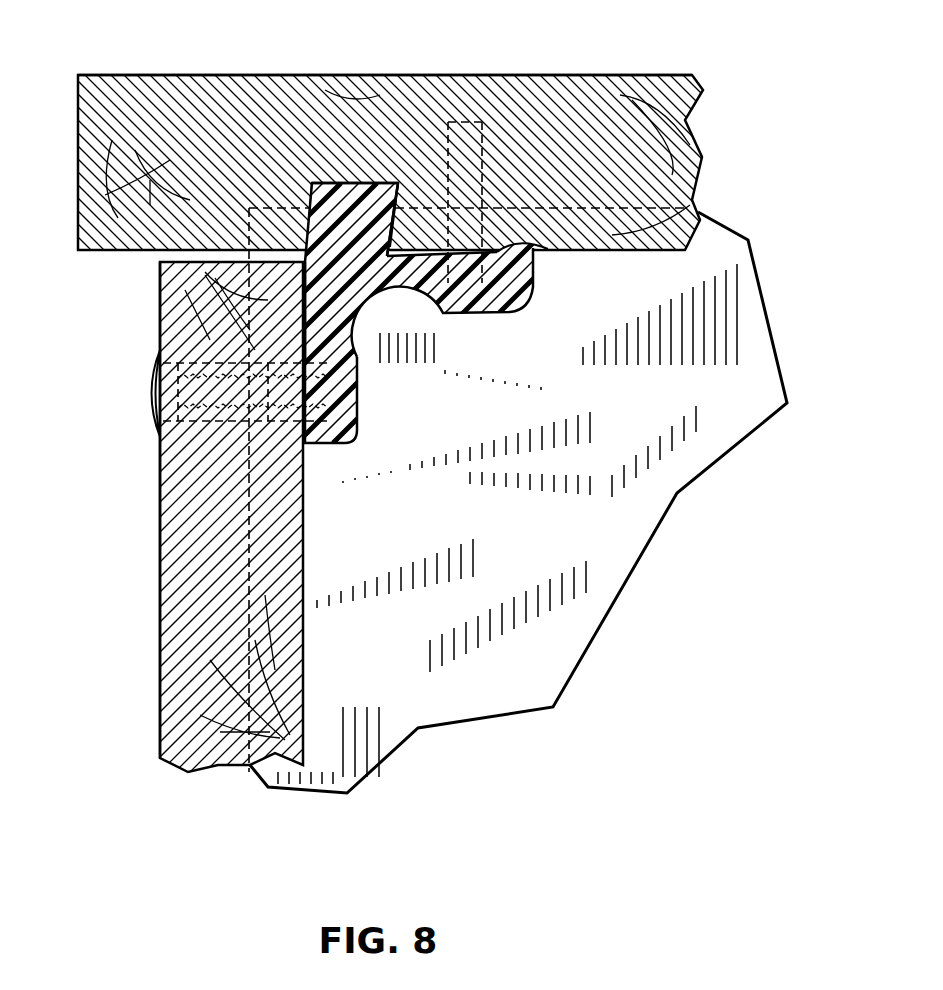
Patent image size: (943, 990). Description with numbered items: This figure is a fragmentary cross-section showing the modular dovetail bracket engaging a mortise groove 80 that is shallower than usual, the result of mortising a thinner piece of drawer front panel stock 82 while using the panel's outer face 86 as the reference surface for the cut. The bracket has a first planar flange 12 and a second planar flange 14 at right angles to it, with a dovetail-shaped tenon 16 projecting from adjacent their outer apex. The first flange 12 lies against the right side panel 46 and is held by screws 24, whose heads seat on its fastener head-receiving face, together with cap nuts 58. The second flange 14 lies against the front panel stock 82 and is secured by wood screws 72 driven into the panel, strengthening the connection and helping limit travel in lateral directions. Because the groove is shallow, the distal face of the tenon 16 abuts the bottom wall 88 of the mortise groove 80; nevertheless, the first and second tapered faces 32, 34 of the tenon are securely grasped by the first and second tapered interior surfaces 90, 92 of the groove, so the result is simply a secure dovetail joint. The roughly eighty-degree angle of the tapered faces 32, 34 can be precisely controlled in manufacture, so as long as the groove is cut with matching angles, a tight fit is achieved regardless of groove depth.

The drawer front panel stock 82 is at (712, 127).
The front panel outer face 86 is at (200, 73).
The mortise groove 80 is at (330, 138).
The bottom wall 88 is at (366, 182).
The dovetail-shaped tenon 16 is at (310, 185).
The first tapered interior surface 90 is at (307, 210).
The second tapered interior surface 92 is at (393, 197).
The wood screws 72 is at (488, 136).
The first tapered face 32 is at (292, 187).
The second tapered face 34 is at (390, 217).
The first planar flange 12 is at (358, 382).
The second planar flange 14 is at (440, 315).
The right side panel 46 is at (152, 652).
The screws 24 is at (158, 302).
The cap nuts 58 is at (156, 368).